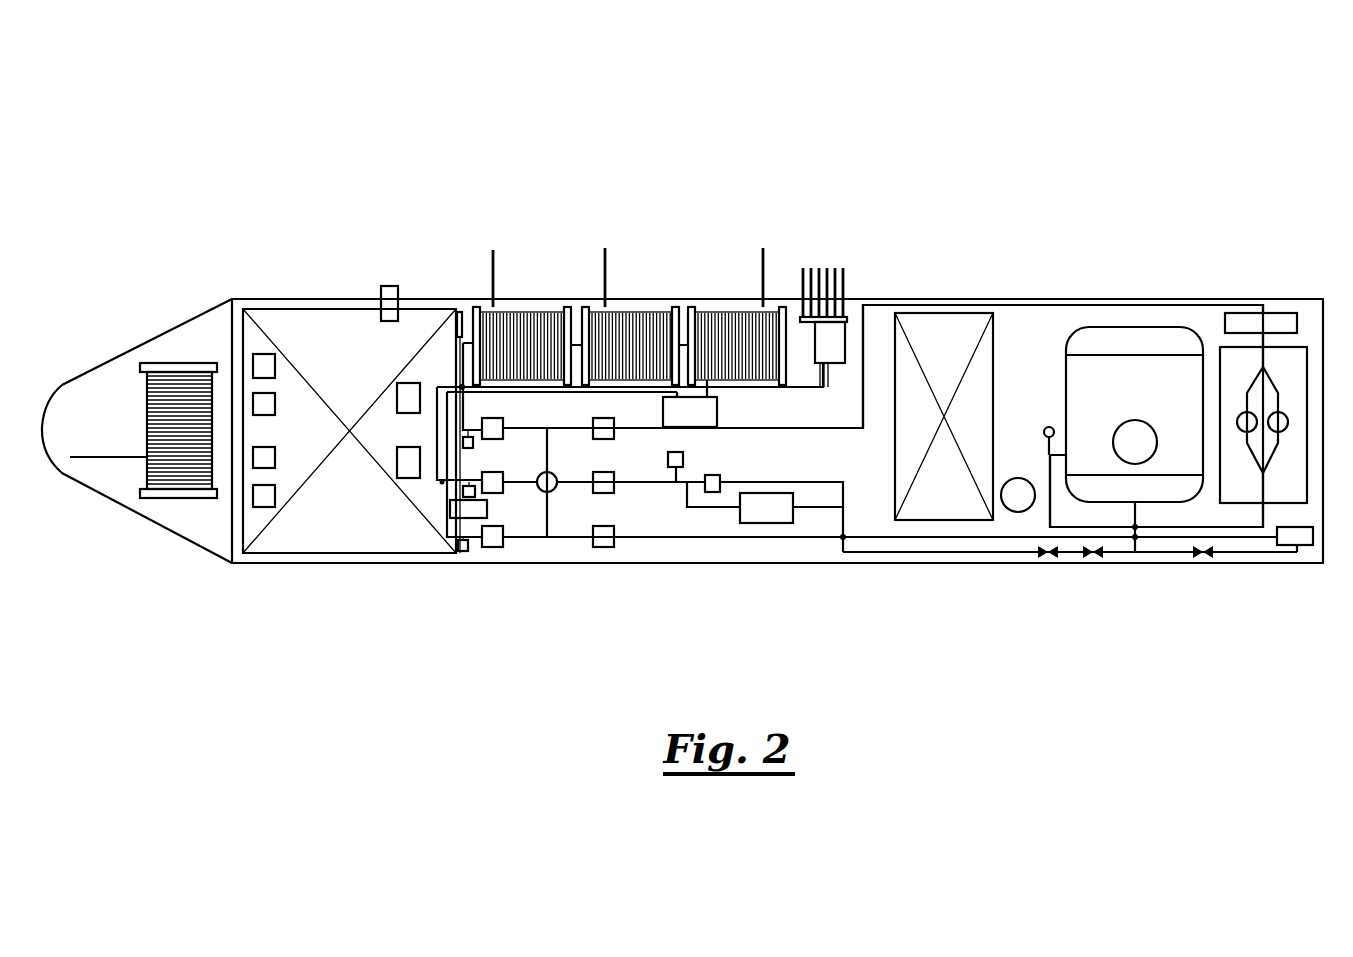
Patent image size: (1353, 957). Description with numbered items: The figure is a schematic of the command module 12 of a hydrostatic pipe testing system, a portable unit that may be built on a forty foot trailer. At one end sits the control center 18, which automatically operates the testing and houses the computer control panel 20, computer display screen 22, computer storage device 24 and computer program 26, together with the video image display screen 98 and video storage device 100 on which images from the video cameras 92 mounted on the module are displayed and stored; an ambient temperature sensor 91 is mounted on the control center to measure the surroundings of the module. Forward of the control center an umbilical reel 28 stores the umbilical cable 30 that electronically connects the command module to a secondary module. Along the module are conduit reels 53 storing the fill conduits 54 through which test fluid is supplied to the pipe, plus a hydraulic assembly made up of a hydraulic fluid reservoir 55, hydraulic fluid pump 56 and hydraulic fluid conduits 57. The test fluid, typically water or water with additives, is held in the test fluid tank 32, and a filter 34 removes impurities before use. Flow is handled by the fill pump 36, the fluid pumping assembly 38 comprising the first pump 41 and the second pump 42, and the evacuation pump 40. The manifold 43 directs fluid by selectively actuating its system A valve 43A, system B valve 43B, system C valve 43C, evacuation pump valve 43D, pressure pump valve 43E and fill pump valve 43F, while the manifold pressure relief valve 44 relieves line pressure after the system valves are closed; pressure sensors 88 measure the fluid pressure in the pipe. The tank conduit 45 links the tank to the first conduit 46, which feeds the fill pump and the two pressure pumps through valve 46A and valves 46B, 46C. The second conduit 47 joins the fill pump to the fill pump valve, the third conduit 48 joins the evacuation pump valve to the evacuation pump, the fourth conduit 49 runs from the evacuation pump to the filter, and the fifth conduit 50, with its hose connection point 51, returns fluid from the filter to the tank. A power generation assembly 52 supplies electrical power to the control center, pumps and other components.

The command module 12 is at (535, 166).
The control center 18 is at (355, 500).
The computer control panel 20 is at (258, 497).
The computer display screen 22 is at (270, 460).
The computer storage device 24 is at (268, 398).
The computer program 26 is at (258, 364).
The umbilical reel 28 is at (160, 397).
The umbilical cable 30 is at (112, 458).
The test fluid tank 32 is at (1147, 396).
The filter 34 is at (1298, 493).
The fill pump 36 is at (1300, 545).
The fluid pumping assembly 38 is at (828, 470).
The evacuation pump 40 is at (1280, 320).
The first pump 41 is at (716, 478).
The second pump 42 is at (775, 515).
The manifold 43 is at (560, 540).
The system A valve 43A is at (497, 428).
The system B valve 43B is at (490, 480).
The system C valve 43C is at (492, 547).
The evacuation pump valve 43D is at (606, 437).
The pressure pump valve 43E is at (606, 490).
The fill pump valve 43F is at (608, 545).
The manifold pressure relief valve 44 is at (682, 458).
The tank conduit 45 is at (1138, 553).
The first conduit 46 is at (925, 555).
The valve 46A is at (1203, 559).
The valve 46B is at (1095, 559).
The valve 46C is at (1047, 559).
The second conduit 47 is at (765, 540).
The third conduit 48 is at (1047, 305).
The fourth conduit 49 is at (1233, 343).
The fifth conduit 50 is at (1046, 525).
The hose connection point 51 is at (1047, 427).
The power generation assembly 52 is at (958, 356).
The conduit reels 53 is at (520, 345).
The fill conduits 54 is at (494, 263).
The hydraulic fluid reservoir 55 is at (690, 400).
The hydraulic fluid pump 56 is at (833, 335).
The hydraulic fluid conduits 57 is at (827, 268).
The pressure sensors 88 is at (462, 448).
The ambient temperature sensor 91 is at (460, 318).
The video cameras 92 is at (386, 292).
The video image display screen 98 is at (406, 391).
The video storage device 100 is at (405, 472).